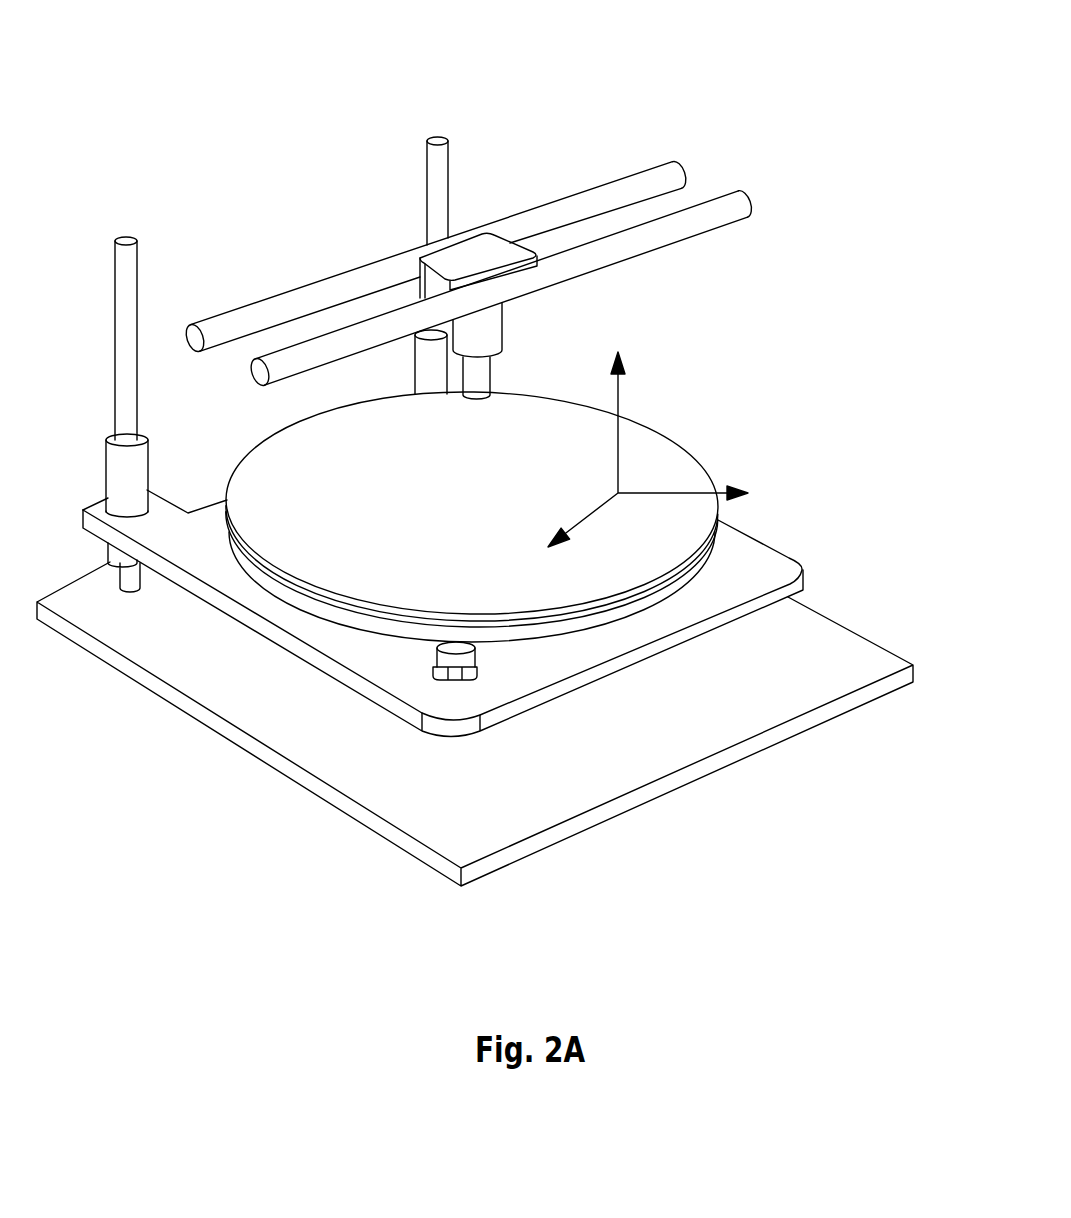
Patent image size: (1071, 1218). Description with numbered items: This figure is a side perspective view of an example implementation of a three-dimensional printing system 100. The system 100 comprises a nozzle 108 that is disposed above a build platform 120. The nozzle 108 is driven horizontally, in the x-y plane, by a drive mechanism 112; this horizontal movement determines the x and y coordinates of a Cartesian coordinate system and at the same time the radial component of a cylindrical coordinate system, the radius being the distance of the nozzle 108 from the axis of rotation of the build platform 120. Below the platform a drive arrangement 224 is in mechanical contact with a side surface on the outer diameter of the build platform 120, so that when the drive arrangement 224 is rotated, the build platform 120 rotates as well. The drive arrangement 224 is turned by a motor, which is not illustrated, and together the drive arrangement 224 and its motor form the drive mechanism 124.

The system 100 is at (475, 510).
The drive mechanism 112 is at (503, 227).
The nozzle 108 is at (470, 383).
The build platform 120 is at (465, 594).
The drive arrangement 224 is at (339, 797).
The drive mechanism 124 is at (339, 824).